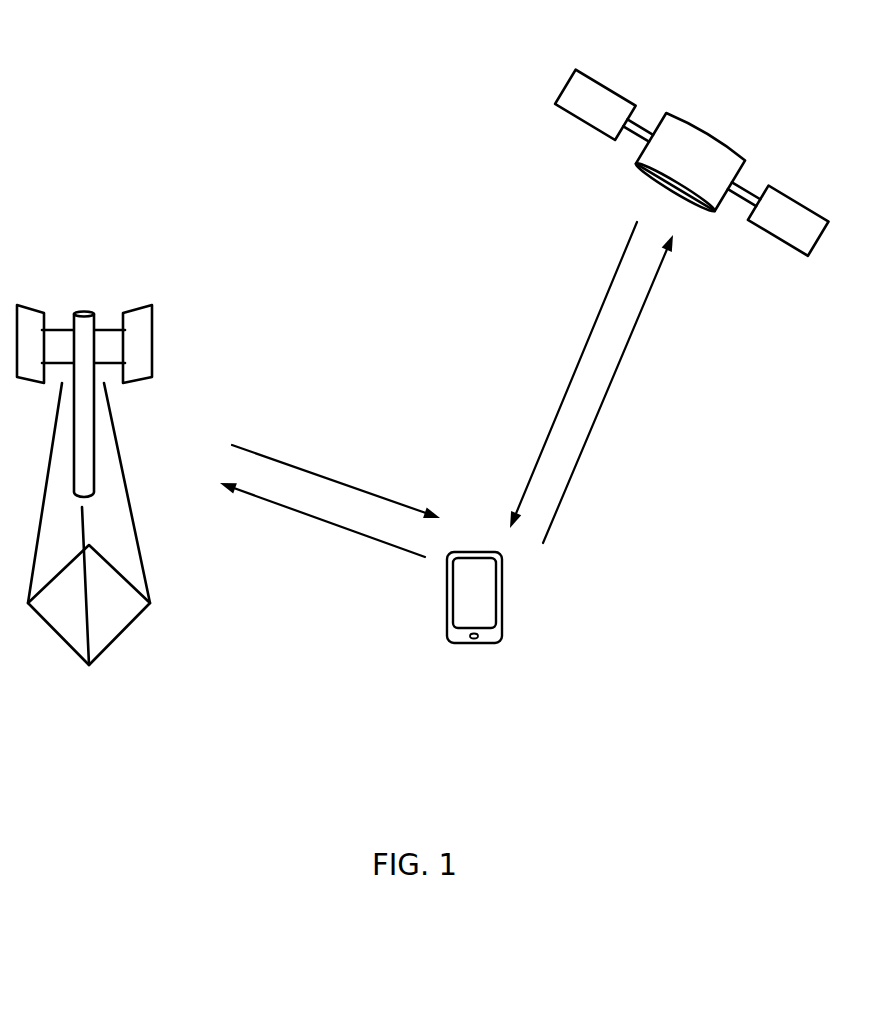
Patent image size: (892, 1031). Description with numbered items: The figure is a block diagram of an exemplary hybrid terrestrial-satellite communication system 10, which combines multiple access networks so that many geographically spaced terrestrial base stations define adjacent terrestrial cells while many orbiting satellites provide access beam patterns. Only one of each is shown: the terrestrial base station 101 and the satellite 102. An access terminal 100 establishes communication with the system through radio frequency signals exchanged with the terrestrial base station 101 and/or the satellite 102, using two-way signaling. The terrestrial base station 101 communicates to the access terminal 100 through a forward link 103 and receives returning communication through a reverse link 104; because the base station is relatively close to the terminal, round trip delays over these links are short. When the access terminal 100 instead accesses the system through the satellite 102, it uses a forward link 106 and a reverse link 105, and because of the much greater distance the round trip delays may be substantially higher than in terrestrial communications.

The hybrid terrestrial-satellite communication system 10 is at (139, 37).
The access terminal 100 is at (473, 643).
The terrestrial base station 101 is at (62, 638).
The satellite 102 is at (707, 130).
The forward link 103 is at (255, 450).
The reverse link 104 is at (408, 553).
The reverse link 105 is at (555, 418).
The forward link 106 is at (580, 468).